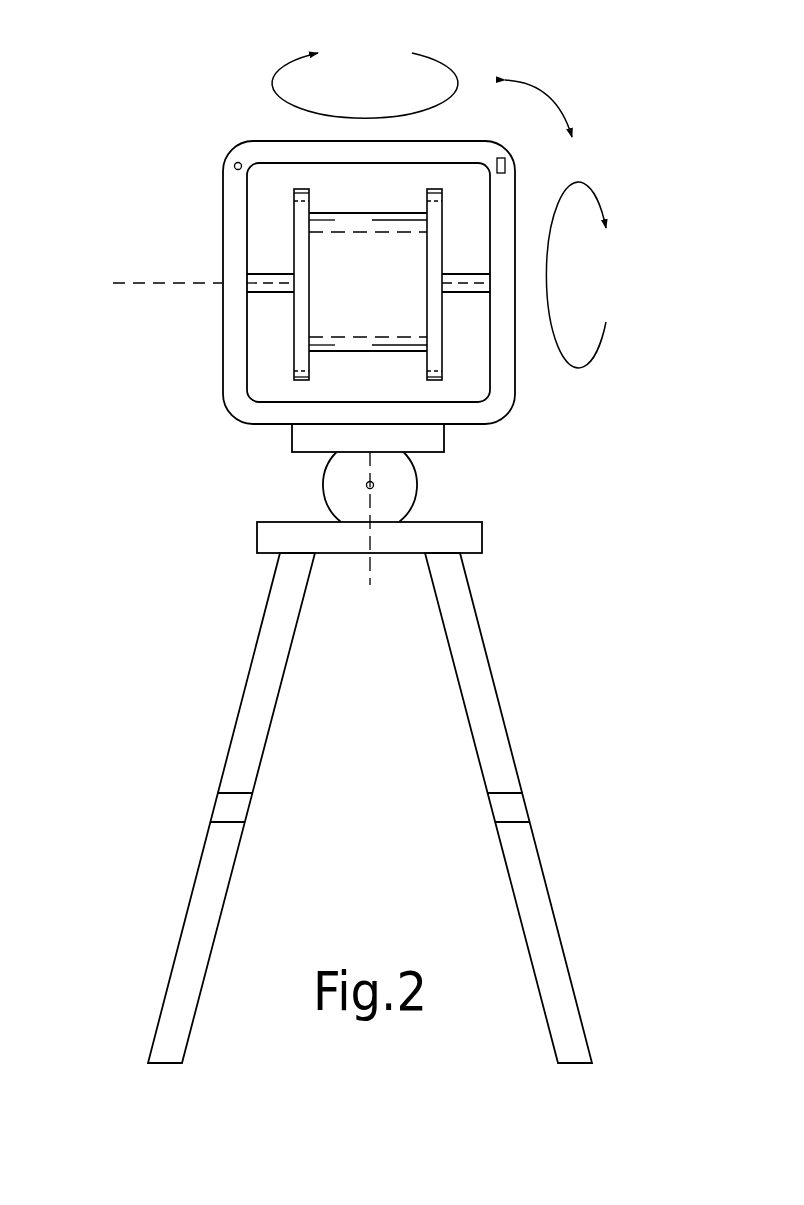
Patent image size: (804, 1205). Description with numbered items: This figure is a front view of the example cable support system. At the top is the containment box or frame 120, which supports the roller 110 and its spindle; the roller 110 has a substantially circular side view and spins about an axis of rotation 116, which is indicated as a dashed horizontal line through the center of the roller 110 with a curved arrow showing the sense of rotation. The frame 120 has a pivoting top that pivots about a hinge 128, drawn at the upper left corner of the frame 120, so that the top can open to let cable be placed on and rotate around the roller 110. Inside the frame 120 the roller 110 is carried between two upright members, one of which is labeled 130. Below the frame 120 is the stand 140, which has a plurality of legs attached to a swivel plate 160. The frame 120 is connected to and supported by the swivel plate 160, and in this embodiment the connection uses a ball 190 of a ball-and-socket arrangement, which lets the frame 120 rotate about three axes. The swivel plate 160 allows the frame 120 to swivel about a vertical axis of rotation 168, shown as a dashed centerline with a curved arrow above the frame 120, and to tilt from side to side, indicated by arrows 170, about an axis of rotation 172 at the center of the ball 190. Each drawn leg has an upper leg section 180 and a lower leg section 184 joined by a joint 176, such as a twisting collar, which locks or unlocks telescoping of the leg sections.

The roller 110 is at (401, 273).
The axis of rotation 116 is at (158, 283).
The frame 120 is at (238, 224).
The hinge 128 is at (238, 162).
The mounting bar 130 is at (437, 202).
The stand 140 is at (382, 758).
The swivel plate 160 is at (446, 437).
The axis of rotation 168 is at (432, 58).
The arrows (tilting) 170 is at (547, 97).
The axis of rotation 172 is at (370, 485).
The joint 176 is at (228, 812).
The upper leg section 180 is at (246, 685).
The lower leg section 184 is at (185, 920).
The ball 190 is at (417, 490).